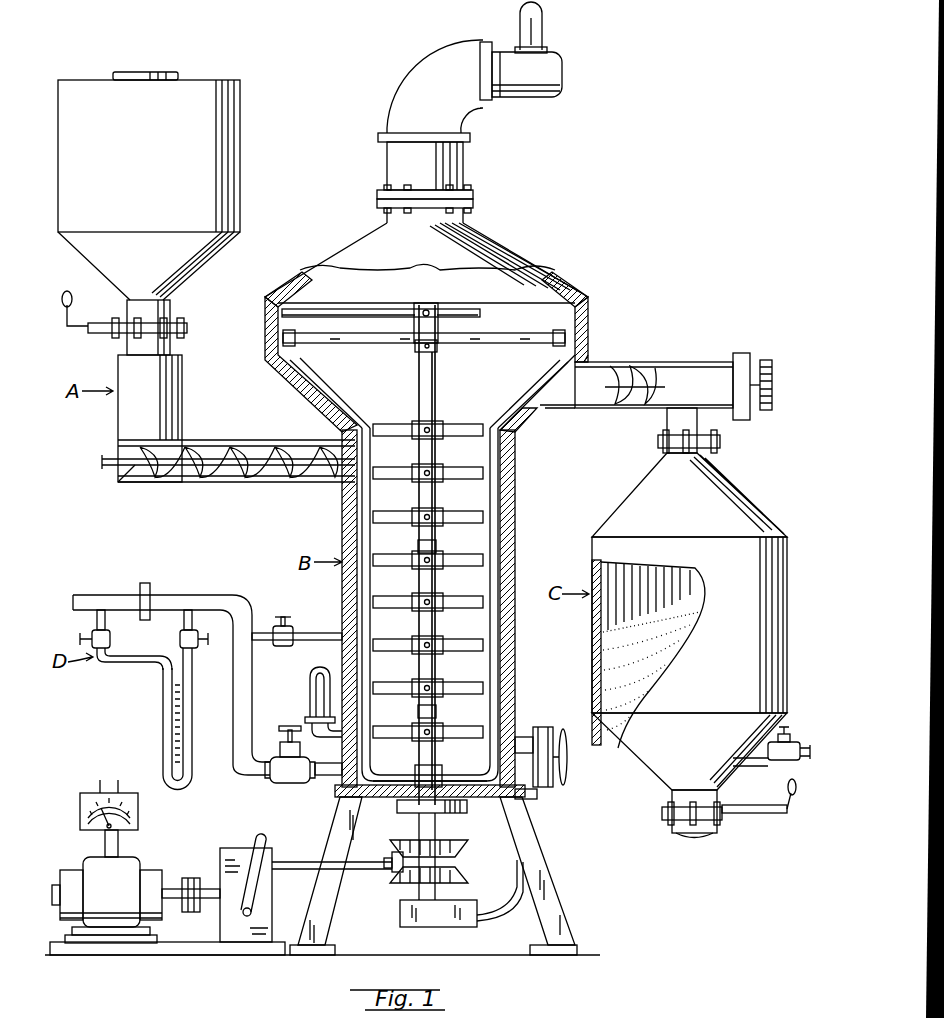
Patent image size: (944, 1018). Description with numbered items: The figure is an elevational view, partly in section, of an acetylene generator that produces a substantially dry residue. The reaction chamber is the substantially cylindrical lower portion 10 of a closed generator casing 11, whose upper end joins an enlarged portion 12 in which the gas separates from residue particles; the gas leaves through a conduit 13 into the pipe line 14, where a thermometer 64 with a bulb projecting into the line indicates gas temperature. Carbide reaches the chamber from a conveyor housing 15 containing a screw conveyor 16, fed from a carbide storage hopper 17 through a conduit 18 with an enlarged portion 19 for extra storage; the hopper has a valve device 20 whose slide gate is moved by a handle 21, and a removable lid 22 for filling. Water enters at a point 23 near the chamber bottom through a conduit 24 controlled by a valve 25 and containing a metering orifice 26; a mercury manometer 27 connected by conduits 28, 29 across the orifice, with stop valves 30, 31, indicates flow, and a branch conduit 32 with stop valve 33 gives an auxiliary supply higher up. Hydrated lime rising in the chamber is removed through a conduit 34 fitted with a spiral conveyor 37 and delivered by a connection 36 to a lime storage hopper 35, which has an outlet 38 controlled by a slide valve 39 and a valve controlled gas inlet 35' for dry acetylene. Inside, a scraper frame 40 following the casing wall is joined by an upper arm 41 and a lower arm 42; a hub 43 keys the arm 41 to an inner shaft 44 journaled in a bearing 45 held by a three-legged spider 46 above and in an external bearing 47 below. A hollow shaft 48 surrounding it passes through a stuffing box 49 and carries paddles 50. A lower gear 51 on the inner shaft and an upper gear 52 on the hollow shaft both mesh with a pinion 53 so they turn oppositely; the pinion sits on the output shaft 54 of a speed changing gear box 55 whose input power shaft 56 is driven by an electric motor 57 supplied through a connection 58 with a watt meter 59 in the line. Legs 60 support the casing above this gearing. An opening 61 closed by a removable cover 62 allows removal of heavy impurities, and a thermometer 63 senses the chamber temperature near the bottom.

The lower portion of generator casing 10 is at (515, 560).
The closed generator casing 11 is at (548, 278).
The enlarged portion of the casing 12 is at (590, 320).
The conduit 13 is at (462, 168).
The pipe line 14 is at (545, 98).
The conveyor housing 15 is at (298, 440).
The screw conveyor 16 is at (220, 442).
The carbide storage hopper 17 is at (240, 152).
The conduit 18 is at (172, 345).
The enlarged portion 19 is at (182, 389).
The valve device 20 is at (186, 326).
The handle 21 is at (64, 304).
The removable lid 22 is at (178, 74).
The water inlet point 23 is at (335, 778).
The conduit 24 is at (238, 602).
The valve 25 is at (278, 782).
The metering orifice 26 is at (150, 590).
The manometer 27 is at (193, 770).
The conduit 28 is at (193, 668).
The conduit 29 is at (118, 660).
The stop valve 30 is at (90, 632).
The stop valve 31 is at (198, 635).
The branch conduit 32 is at (310, 633).
The stop valve 33 is at (285, 620).
The conduit 34 is at (700, 362).
The lime storage hopper 35 is at (689, 621).
The valve controlled gas inlet 35' is at (782, 742).
The connection 36 is at (667, 422).
The spiral conveyor 37 is at (640, 364).
The outlet 38 is at (672, 800).
The slide valve 39 is at (750, 813).
The frame 40 is at (358, 515).
The arm 41 is at (512, 338).
The arm 42 is at (452, 773).
The hub 43 is at (418, 348).
The inner shaft 44 is at (435, 402).
The bearing 45 is at (430, 312).
The three-legged spider 46 is at (355, 312).
The bearing 47 is at (432, 927).
The hollow shaft 48 is at (437, 553).
The stuffing box 49 is at (455, 813).
The paddles 50 is at (405, 473).
The lower gear 51 is at (402, 886).
The upper gear 52 is at (398, 845).
The pinion 53 is at (392, 875).
The power output shaft 54 is at (287, 860).
The speed changing gear box 55 is at (240, 848).
The input power shaft 56 is at (212, 886).
The electric motor 57 is at (140, 860).
The connection 58 is at (108, 790).
The watt meter 59 is at (140, 812).
The legs 60 is at (545, 878).
The opening 61 is at (530, 800).
The removable cover 62 is at (543, 727).
The thermometer 63 is at (305, 690).
The thermometer 64 is at (545, 28).